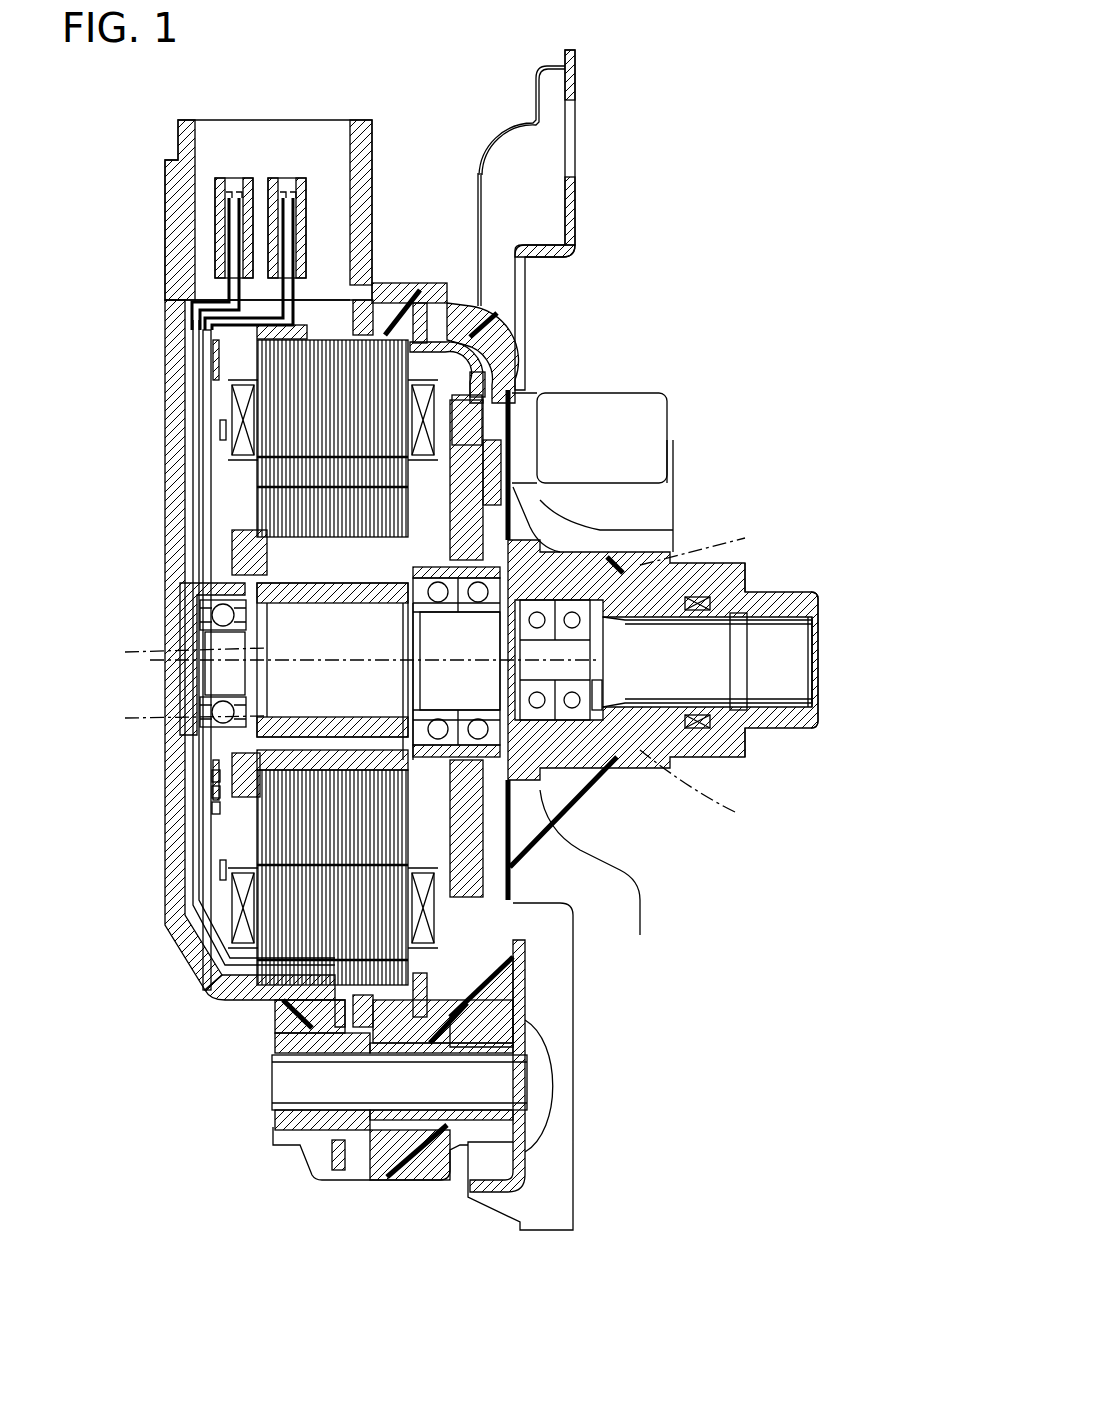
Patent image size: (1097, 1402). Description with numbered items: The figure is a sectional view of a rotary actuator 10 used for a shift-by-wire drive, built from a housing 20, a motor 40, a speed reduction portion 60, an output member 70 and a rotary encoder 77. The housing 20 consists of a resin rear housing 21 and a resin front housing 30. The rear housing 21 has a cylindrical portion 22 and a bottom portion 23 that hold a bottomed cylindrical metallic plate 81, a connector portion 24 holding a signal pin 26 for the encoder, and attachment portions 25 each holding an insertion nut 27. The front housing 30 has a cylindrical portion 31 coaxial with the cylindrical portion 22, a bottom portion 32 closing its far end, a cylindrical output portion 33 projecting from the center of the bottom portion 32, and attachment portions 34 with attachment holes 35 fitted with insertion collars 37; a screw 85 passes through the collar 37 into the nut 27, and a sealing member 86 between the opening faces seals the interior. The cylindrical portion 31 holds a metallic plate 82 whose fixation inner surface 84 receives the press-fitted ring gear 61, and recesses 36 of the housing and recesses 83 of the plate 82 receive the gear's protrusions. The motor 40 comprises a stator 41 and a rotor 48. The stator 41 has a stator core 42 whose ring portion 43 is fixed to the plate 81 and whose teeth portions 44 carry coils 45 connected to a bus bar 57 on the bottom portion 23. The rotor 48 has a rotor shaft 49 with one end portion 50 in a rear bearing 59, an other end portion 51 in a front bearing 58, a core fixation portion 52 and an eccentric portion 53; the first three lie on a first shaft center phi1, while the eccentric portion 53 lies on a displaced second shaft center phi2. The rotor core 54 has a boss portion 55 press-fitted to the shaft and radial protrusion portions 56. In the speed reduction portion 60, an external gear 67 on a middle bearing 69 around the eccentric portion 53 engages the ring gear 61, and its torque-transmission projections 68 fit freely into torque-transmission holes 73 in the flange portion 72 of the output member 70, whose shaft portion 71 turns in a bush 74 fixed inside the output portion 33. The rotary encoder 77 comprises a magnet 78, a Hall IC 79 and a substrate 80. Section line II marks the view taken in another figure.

The rotary actuator 10 is at (133, 120).
The housing 20 is at (362, 62).
The rear housing 21 is at (370, 114).
The cylindrical portion 22 is at (255, 1010).
The bottom portion 23 is at (175, 876).
The connector portion 24 is at (172, 215).
The attachment portion 25 is at (320, 1170).
The signal pin 26 is at (229, 196).
The insertion nut 27 is at (290, 1120).
The front housing 30 is at (415, 278).
The cylindrical portion 31 is at (395, 290).
The bottom portion 32 is at (560, 413).
The output portion 33 is at (750, 746).
The attachment portion 34 is at (415, 1172).
The attachment hole 35 is at (530, 1100).
The recess 36 is at (522, 335).
The insertion collar 37 is at (390, 1162).
The motor 40 is at (255, 972).
The stator 41 is at (241, 655).
The stator core 42 is at (259, 655).
The ring portion 43 is at (258, 334).
The teeth portion 44 is at (283, 398).
The coil 45 is at (250, 430).
The rotor 48 is at (623, 753).
The rotor shaft 49 is at (482, 742).
The one end portion 50 is at (222, 670).
The other end portion 51 is at (790, 664).
The core fixation portion 52 is at (300, 612).
The eccentric portion 53 is at (790, 627).
The rotor core 54 is at (650, 845).
The boss portion 55 is at (545, 722).
The protrusion portion 56 is at (562, 724).
The bus bar 57 is at (207, 520).
The front bearing 58 is at (750, 706).
The rear bearing 59 is at (215, 634).
The speed reduction portion 60 is at (557, 408).
The ring gear 61 is at (485, 378).
The external gear 67 is at (500, 445).
The torque-transmission projection 68 is at (540, 440).
The middle bearing 69 is at (620, 535).
The output member 70 is at (760, 592).
The shaft portion 71 is at (697, 732).
The flange portion 72 is at (483, 880).
The torque-transmission hole 73 is at (565, 505).
The bush 74 is at (745, 576).
The rotary encoder 77 is at (104, 752).
The magnet 78 is at (212, 792).
The Hall IC 79 is at (212, 776).
The substrate 80 is at (212, 808).
The plate 81 is at (195, 922).
The plate 82 is at (421, 305).
The recess 83 is at (470, 318).
The fixation inner surface 84 is at (525, 975).
The screw 85 is at (500, 1080).
The sealing member 86 is at (345, 1172).
The section line II is at (98, 683).
The first shaft center phi1 is at (427, 733).
The second shaft center phi2 is at (705, 540).